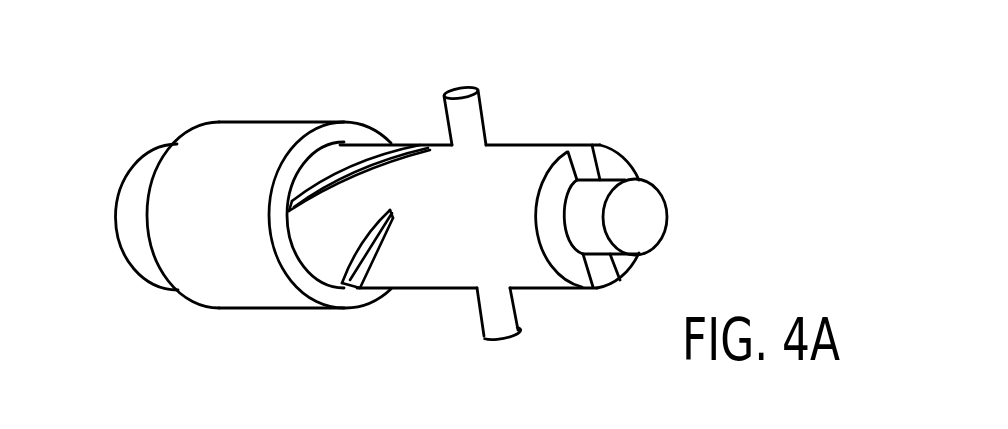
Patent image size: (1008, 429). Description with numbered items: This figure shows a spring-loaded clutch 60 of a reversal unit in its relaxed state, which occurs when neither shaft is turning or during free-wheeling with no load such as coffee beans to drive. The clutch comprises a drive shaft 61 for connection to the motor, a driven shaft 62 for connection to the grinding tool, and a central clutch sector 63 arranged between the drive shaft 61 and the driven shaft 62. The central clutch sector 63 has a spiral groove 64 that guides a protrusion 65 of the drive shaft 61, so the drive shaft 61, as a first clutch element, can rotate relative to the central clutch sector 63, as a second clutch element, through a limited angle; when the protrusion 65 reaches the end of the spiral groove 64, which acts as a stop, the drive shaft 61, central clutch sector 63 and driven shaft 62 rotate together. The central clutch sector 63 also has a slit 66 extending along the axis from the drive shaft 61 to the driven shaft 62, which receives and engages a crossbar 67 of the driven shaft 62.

The spring-loaded clutch 60 is at (764, 93).
The drive shaft 61 is at (198, 128).
The driven shaft 62 is at (657, 184).
The central clutch sector 63 is at (616, 144).
The spiral groove 64 is at (373, 247).
The protrusion 65 is at (344, 283).
The slit 66 is at (515, 144).
The crossbar 67 is at (443, 102).